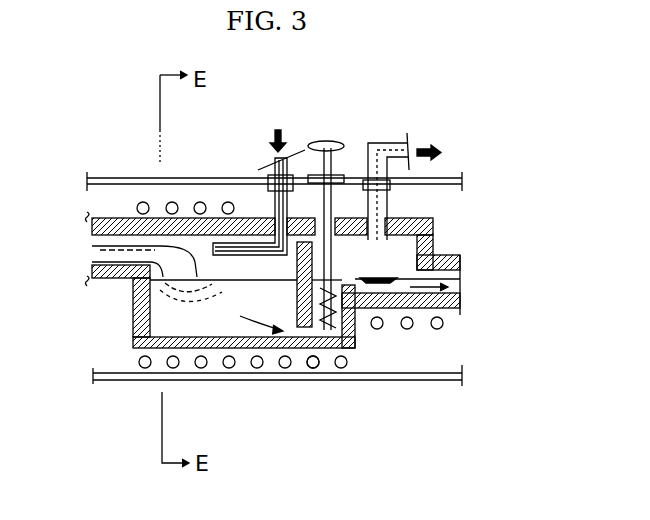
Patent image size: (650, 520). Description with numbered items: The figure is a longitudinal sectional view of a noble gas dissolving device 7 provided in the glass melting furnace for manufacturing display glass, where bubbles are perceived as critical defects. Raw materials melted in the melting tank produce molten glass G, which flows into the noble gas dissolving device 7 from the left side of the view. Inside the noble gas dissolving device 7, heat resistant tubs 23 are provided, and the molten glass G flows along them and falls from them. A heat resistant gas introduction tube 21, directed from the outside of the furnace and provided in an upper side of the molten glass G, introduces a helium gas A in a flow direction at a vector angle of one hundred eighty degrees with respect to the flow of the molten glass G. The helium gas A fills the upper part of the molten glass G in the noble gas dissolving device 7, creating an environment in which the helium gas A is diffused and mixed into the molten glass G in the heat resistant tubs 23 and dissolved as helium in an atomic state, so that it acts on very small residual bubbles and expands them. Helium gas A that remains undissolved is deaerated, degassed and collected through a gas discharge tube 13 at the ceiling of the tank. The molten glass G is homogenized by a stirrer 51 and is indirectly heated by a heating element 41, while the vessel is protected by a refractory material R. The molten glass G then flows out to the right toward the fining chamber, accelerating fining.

The noble gas dissolving device 7 is at (122, 319).
The gas discharge tube 13 is at (387, 200).
The heat resistant gas introduction tube 21 is at (278, 219).
The heat resistant tubs 23 is at (181, 244).
The heating element 41 is at (407, 323).
The stirrer 51 is at (328, 153).
The helium gas A is at (285, 128).
The molten glass G is at (210, 316).
The refractory material R is at (313, 358).